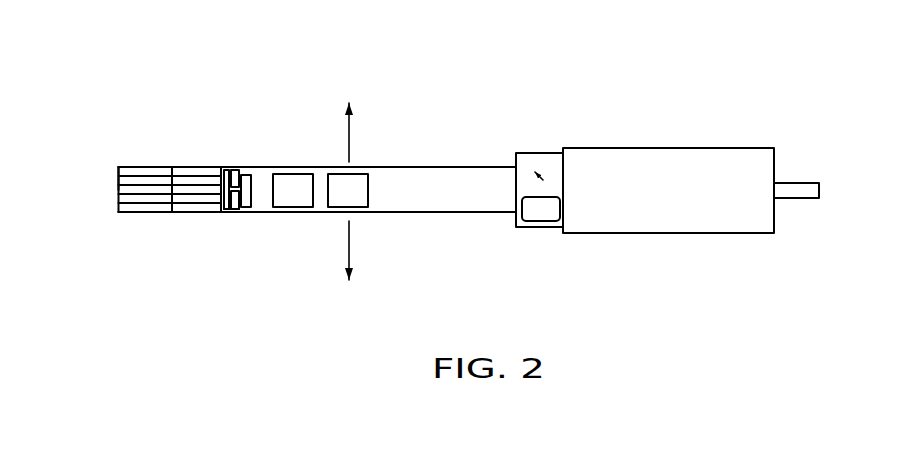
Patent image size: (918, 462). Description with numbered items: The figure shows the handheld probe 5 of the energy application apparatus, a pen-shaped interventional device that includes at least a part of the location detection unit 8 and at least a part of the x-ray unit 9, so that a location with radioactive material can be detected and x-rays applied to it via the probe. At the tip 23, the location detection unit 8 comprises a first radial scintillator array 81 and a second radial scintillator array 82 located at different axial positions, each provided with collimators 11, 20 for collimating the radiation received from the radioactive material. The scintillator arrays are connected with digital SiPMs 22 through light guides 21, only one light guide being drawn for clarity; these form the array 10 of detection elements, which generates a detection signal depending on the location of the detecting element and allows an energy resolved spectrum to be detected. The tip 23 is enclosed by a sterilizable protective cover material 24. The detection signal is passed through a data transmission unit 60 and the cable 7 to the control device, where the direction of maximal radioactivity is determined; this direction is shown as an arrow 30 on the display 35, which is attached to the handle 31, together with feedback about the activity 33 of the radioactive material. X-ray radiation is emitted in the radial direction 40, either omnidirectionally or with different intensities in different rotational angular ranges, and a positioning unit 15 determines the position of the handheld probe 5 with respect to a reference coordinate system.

The handheld probe 5 is at (472, 123).
The cable 7 is at (793, 180).
The location detection unit 8 is at (188, 105).
The x-ray unit 9 is at (340, 209).
The array of detection elements 10 is at (157, 265).
The collimator 11 is at (127, 213).
The positioning unit 15 is at (298, 173).
The collimator 20 is at (197, 215).
The light guide 21 is at (228, 166).
The digital SiPMs 22 is at (240, 213).
The tip 23 is at (107, 147).
The protective cover material 24 is at (145, 213).
The arrow 30 is at (545, 162).
The handle 31 is at (690, 148).
The activity feedback 33 is at (526, 219).
The display 35 is at (542, 228).
The radial direction 40 is at (353, 140).
The data transmission unit 60 is at (256, 172).
The first radial scintillator array 81 is at (145, 164).
The second radial scintillator array 82 is at (214, 161).